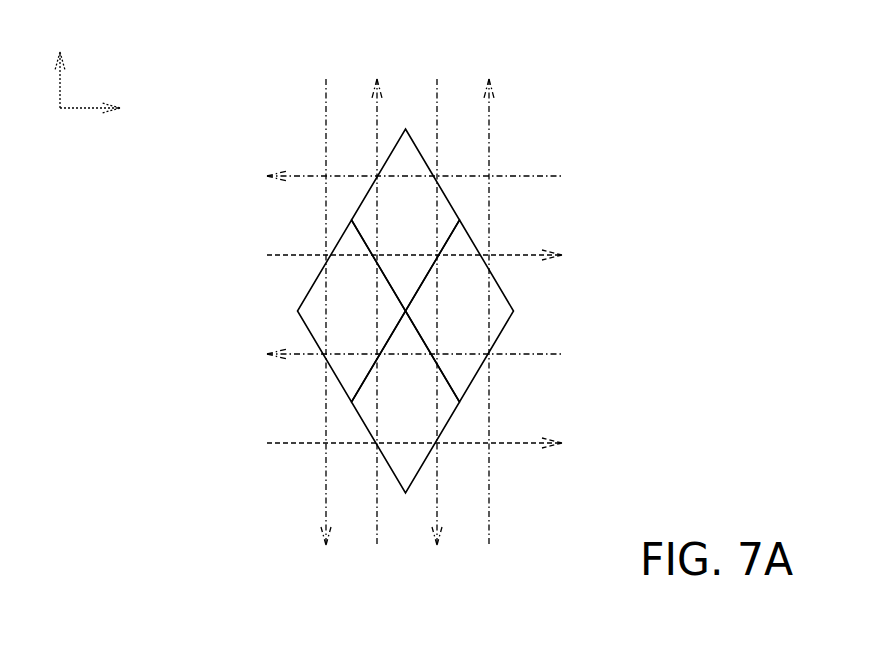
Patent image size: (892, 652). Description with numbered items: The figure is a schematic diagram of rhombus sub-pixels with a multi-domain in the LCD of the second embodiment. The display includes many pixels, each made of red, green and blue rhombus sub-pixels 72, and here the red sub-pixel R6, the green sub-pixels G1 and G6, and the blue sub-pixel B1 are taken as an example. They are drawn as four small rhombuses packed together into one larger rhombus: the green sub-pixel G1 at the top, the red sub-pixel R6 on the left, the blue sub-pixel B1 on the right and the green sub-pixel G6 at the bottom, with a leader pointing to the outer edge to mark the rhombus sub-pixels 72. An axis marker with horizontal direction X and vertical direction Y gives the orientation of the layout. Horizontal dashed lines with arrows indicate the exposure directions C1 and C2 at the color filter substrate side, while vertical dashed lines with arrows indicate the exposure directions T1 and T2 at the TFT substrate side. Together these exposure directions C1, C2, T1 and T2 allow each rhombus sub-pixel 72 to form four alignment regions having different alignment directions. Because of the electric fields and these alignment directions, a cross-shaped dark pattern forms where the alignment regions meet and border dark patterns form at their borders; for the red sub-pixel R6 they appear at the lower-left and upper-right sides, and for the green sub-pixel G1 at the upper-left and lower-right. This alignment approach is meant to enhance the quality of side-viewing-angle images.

The rhombus sub-pixel 72 is at (430, 311).
The green sub-pixel G1 is at (406, 220).
The red sub-pixel R6 is at (352, 311).
The blue sub-pixel B1 is at (460, 311).
The green sub-pixel G6 is at (406, 402).
The exposure direction at the TFT substrate side T1 is at (384, 332).
The exposure direction at the TFT substrate side T2 is at (434, 294).
The exposure direction at the CF substrate side C1 is at (394, 266).
The exposure direction at the CF substrate side C2 is at (437, 349).
The X axis X is at (101, 108).
The Y axis Y is at (59, 62).